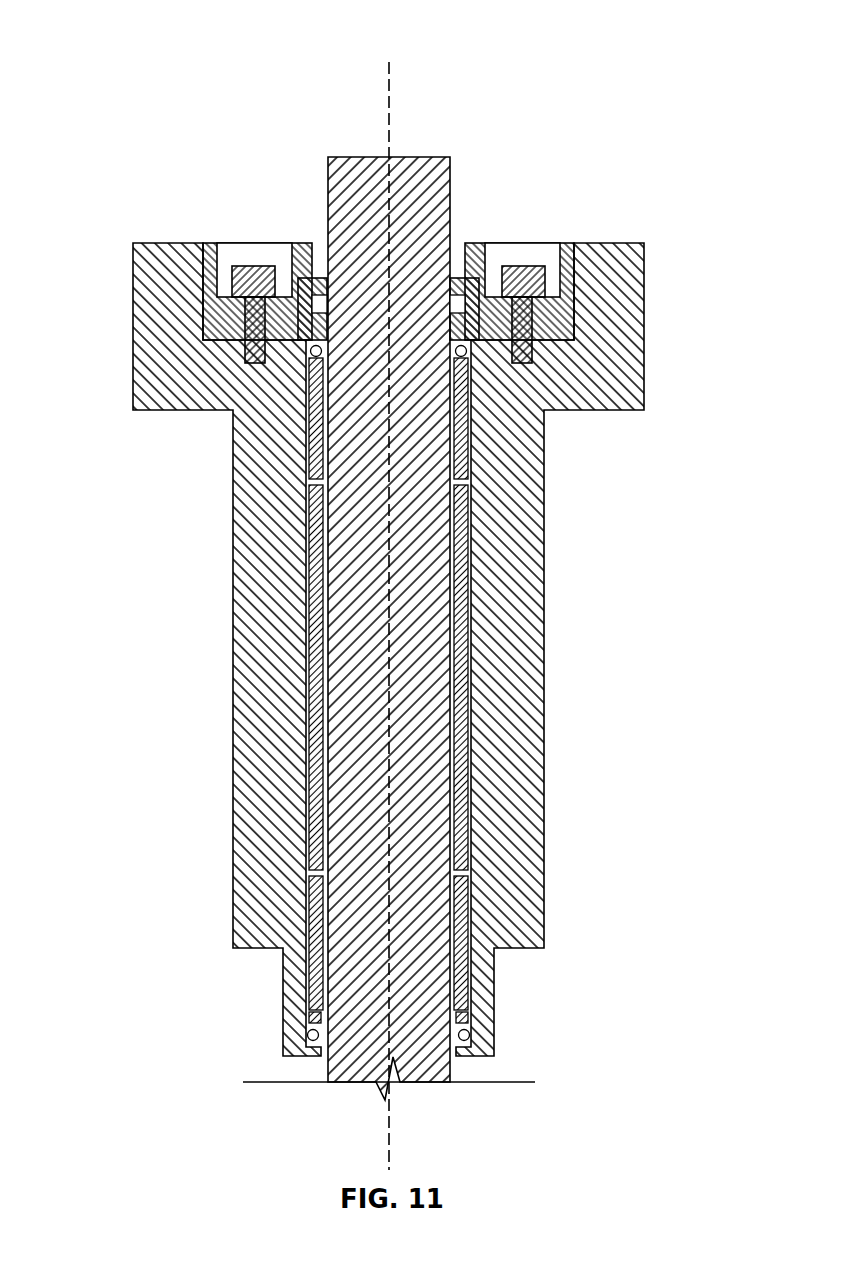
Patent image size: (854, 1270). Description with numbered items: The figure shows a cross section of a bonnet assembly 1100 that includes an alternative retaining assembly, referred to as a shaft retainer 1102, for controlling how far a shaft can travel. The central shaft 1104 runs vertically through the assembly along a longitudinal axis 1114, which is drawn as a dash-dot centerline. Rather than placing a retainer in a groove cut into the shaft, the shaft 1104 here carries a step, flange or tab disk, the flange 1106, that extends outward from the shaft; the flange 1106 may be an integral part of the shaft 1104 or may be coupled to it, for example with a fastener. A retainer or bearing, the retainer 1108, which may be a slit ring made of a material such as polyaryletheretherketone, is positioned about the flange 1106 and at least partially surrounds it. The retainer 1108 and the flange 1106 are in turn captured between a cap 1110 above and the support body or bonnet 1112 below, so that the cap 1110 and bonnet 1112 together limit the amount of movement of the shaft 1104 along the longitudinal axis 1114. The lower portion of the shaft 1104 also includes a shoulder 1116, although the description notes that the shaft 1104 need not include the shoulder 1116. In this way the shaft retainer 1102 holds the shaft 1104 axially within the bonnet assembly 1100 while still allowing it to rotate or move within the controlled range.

The bonnet assembly 1100 is at (214, 60).
The shaft retainer 1102 is at (287, 222).
The shaft 1104 is at (338, 530).
The flange 1106 is at (316, 311).
The retainer 1108 is at (457, 277).
The cap 1110 is at (568, 288).
The bonnet 1112 is at (250, 692).
The longitudinal axis 1114 is at (389, 118).
The shoulder 1116 is at (318, 1008).